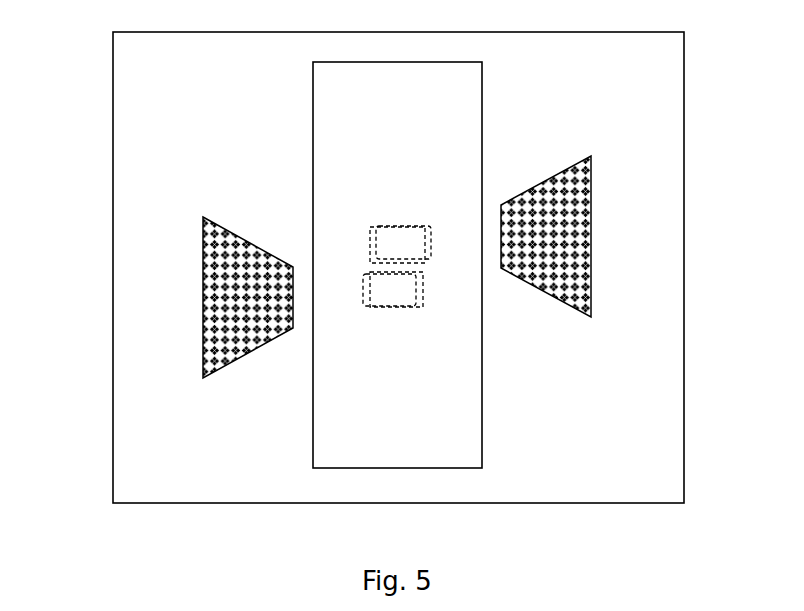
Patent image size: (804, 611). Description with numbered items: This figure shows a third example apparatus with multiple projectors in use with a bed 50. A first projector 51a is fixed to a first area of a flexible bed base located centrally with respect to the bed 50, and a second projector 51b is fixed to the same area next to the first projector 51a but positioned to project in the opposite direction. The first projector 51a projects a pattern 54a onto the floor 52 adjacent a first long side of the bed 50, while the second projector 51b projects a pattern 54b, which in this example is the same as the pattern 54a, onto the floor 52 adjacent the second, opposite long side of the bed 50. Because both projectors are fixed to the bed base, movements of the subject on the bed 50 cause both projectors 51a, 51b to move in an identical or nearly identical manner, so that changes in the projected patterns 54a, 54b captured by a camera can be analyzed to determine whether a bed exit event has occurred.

The bed 50 is at (405, 165).
The first projector 51a is at (382, 233).
The second projector 51b is at (395, 292).
The floor 52 is at (623, 91).
The pattern 54a is at (570, 195).
The pattern 54b is at (230, 334).